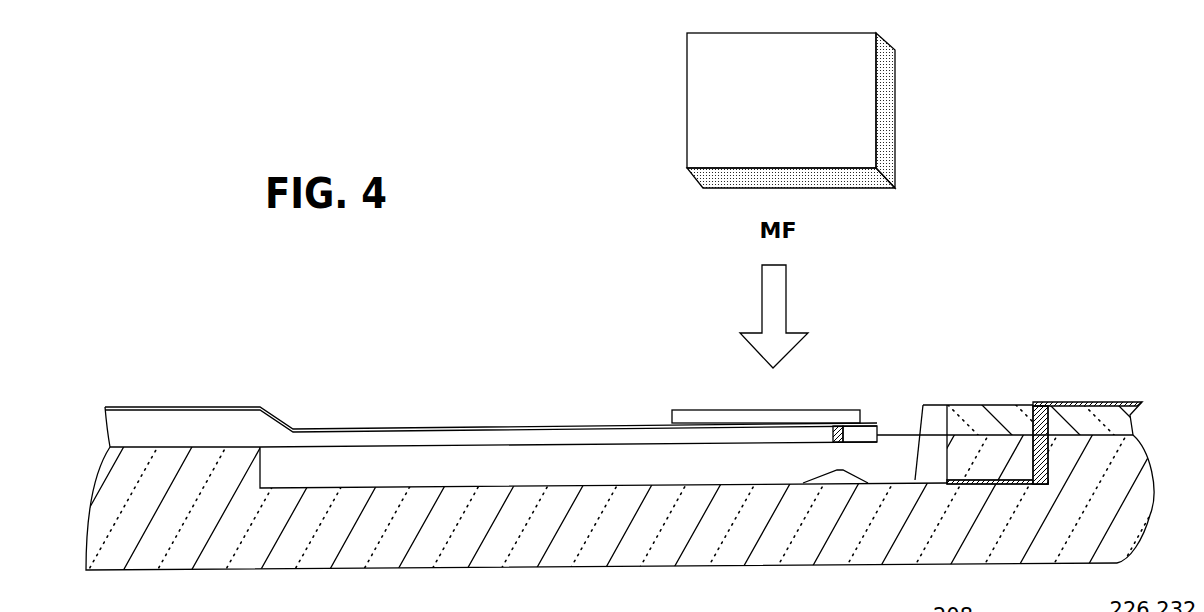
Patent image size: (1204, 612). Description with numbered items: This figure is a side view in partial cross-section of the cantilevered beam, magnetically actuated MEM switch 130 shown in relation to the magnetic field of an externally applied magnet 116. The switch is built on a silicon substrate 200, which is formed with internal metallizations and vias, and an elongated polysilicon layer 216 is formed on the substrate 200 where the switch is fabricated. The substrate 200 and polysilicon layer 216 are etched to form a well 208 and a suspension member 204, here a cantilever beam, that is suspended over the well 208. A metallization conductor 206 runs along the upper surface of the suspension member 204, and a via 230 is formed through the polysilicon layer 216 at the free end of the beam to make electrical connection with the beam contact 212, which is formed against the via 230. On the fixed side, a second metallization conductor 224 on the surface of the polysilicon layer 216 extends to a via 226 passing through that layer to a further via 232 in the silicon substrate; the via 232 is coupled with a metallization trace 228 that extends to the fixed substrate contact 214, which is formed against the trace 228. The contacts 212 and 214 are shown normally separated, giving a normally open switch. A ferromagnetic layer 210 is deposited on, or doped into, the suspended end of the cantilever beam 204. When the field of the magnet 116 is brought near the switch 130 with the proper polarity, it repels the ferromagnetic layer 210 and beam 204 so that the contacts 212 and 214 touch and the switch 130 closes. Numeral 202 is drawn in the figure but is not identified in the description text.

The magnet 116 is at (897, 180).
The MEM switch 130 is at (173, 306).
The silicon substrate 200 is at (100, 480).
The lower layer 202 is at (143, 450).
The suspension member 204 is at (495, 437).
The metallization conductor 206 is at (324, 425).
The well 208 is at (430, 455).
The ferromagnetic layer 210 is at (810, 410).
The beam contact 212 is at (808, 442).
The substrate contact 214 is at (823, 470).
The polysilicon layer 216 is at (963, 405).
The second metallization conductor 224 is at (1108, 402).
The via 226 is at (1052, 430).
The metallization trace 228 is at (915, 478).
The via 230 is at (837, 438).
The via 232 is at (1050, 470).